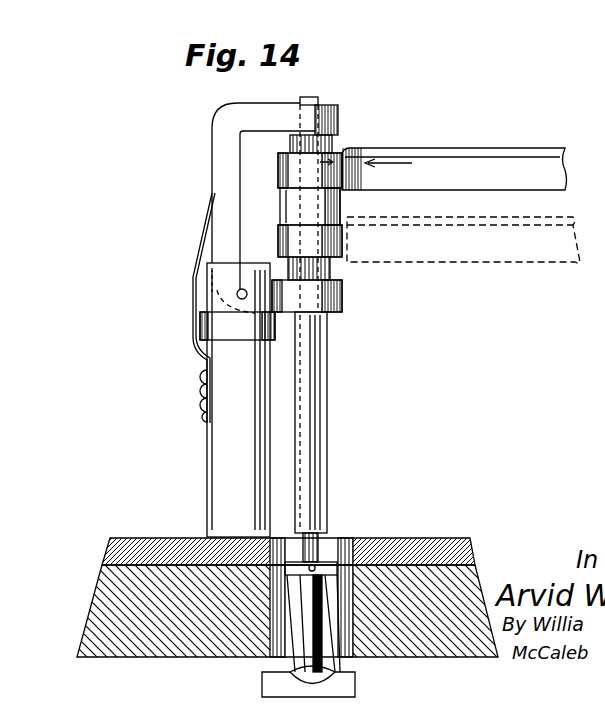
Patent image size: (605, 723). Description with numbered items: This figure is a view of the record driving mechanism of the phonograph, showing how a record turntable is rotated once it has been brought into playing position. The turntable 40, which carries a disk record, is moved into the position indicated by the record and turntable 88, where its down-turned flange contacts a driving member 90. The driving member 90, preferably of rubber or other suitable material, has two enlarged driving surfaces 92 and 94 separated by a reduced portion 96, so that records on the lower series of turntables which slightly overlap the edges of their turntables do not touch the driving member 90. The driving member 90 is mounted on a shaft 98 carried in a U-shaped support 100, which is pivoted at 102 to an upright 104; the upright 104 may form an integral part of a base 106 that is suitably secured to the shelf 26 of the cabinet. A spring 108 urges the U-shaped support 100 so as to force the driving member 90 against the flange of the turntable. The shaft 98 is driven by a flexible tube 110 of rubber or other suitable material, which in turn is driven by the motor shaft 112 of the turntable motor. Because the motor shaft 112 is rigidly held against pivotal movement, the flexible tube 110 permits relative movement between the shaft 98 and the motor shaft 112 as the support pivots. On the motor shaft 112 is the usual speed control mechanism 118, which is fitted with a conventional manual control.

The shelf 26 is at (95, 612).
The turntable 40 is at (462, 210).
The record and turntable in driving position 88 is at (432, 150).
The driving member 90 is at (352, 244).
The enlarged driving surface 92 is at (280, 165).
The enlarged driving surface 94 is at (283, 233).
The reduced portion 96 is at (287, 198).
The shaft 98 is at (318, 99).
The U-shaped support 100 is at (230, 118).
The pivot 102 is at (237, 294).
The upright 104 is at (217, 450).
The base 106 is at (150, 510).
The spring 108 is at (200, 327).
The flexible tube 110 is at (315, 408).
The motor shaft 112 is at (323, 537).
The speed control mechanism 118 is at (262, 683).